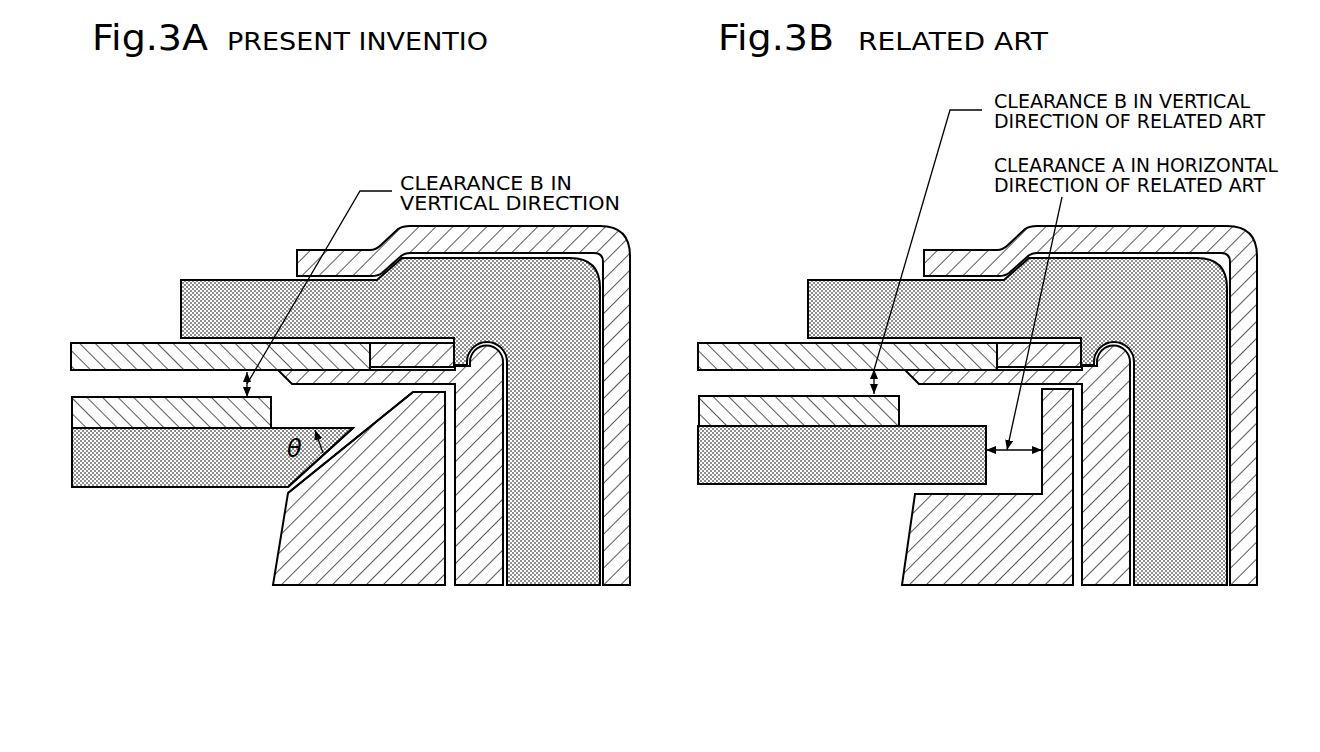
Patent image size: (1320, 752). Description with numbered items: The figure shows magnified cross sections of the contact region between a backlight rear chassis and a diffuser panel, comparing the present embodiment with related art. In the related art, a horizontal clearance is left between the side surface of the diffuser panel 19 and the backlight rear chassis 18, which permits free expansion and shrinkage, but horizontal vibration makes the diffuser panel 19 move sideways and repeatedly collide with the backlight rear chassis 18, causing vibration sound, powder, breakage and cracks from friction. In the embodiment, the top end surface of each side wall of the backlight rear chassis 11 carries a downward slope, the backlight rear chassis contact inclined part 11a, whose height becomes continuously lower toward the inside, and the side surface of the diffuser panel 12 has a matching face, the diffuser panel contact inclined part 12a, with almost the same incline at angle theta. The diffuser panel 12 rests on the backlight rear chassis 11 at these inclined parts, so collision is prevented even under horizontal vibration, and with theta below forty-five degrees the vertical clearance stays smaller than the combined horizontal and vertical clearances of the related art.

In FIG. 3A, the diffuser panel 12 is at (162, 452).
In FIG. 3A, the diffuser panel contact inclined part 12a is at (300, 470).
In FIG. 3A, the backlight rear chassis 11 is at (383, 543).
In FIG. 3A, the backlight rear chassis contact inclined part 11a is at (310, 478).
In FIG. 3B, the diffuser panel 19 is at (787, 450).
In FIG. 3B, the backlight rear chassis 18 is at (1012, 543).